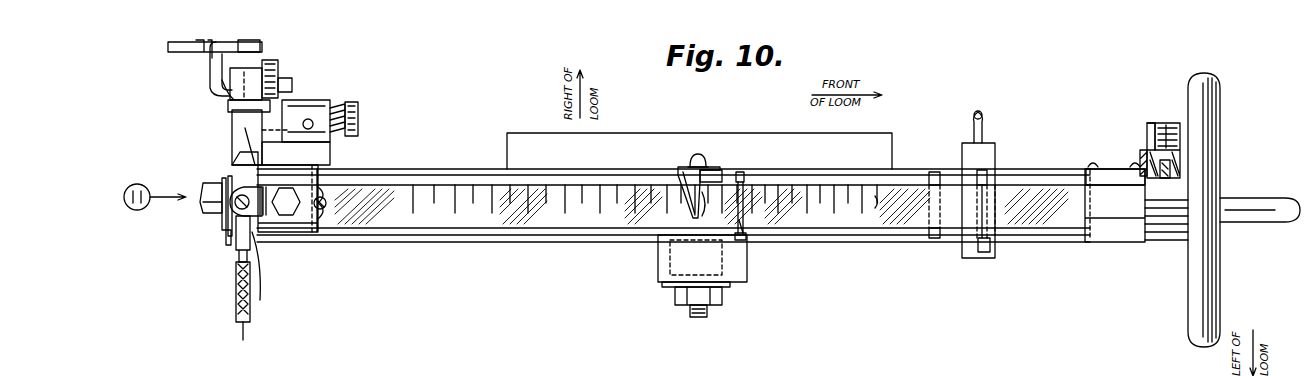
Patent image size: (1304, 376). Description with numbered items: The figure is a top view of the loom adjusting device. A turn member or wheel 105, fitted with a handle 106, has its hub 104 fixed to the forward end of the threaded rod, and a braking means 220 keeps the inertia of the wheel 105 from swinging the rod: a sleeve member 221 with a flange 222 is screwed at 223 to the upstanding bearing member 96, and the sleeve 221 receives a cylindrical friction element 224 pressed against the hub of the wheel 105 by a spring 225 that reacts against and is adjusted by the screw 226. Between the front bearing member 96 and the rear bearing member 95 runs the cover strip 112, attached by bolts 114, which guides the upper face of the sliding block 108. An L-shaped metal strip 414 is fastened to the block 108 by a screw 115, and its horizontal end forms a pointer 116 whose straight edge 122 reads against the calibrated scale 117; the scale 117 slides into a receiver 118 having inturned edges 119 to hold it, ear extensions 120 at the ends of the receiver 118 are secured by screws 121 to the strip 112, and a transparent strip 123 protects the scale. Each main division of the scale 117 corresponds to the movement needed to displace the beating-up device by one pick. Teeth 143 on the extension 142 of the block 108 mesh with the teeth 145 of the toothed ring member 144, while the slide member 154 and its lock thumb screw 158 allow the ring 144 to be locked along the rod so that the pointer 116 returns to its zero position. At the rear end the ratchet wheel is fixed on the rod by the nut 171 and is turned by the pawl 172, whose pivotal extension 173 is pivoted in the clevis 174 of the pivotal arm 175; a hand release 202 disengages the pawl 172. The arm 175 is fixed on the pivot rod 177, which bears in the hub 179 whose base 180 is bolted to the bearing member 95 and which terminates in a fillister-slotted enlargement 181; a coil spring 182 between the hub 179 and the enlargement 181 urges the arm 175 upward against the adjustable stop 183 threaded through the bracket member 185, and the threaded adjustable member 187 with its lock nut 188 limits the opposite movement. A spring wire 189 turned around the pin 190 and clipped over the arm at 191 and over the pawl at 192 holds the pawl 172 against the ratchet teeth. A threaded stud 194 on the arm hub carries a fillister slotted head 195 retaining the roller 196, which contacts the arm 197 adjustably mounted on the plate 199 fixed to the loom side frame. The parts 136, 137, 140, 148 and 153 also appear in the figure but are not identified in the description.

The upstanding bearing member 95 is at (320, 222).
The upstanding bearing member 96 is at (1130, 246).
The hub 104 is at (1166, 242).
The turn member 105 is at (1210, 103).
The handle 106 is at (1270, 222).
The block 108 is at (742, 172).
The cover strip 112 is at (487, 158).
The bolt 114 is at (290, 215).
The screw 115 is at (700, 154).
The pointer 116 is at (688, 167).
The scale 117 is at (438, 205).
The receiver 118 is at (644, 184).
The inturned edges 119 is at (383, 180).
The ear extensions 120 is at (322, 212).
The screw 121 is at (323, 200).
The straight edge 122 is at (705, 225).
The transparent strip 123 is at (890, 230).
The nut 136 is at (700, 317).
The bolt 137 is at (678, 300).
The slide block 140 is at (658, 272).
The extension 142 is at (745, 173).
The teeth 143 is at (748, 238).
The toothed ring member 144 is at (935, 172).
The teeth 145 is at (935, 240).
The slide 148 is at (990, 175).
The rod 153 is at (990, 256).
The slide member 154 is at (994, 146).
The lock thumb screw 158 is at (980, 110).
The nut 171 is at (208, 208).
The pawl 172 is at (237, 290).
The pivotal extension 173 is at (230, 226).
The clevis 174 is at (238, 254).
The pivotal arm 175 is at (200, 158).
The pivot rod 177 is at (230, 122).
The hub 179 is at (312, 104).
The base 180 is at (305, 154).
The fillister-slotted enlargement 181 is at (360, 108).
The coil spring 182 is at (348, 106).
The adjustable stop 183 is at (224, 214).
The bracket member 185 is at (248, 212).
The threaded adjustable member 187 is at (292, 84).
The lock nut 188 is at (235, 104).
The spring wire 189 is at (228, 244).
The pin 190 is at (232, 168).
The clip point 191 is at (232, 150).
The clip point 192 is at (257, 250).
The threaded stud 194 is at (275, 74).
The fillister slotted head 195 is at (260, 47).
The roller 196 is at (226, 88).
The arm 197 is at (215, 80).
The plate 199 is at (186, 52).
The hand release 202 is at (244, 342).
The braking means 220 is at (1180, 158).
The sleeve member 221 is at (1175, 135).
The flange 222 is at (1112, 168).
The screw connection 223 is at (1094, 160).
The cylindrical friction element 224 is at (1172, 168).
The spring 225 is at (1148, 148).
The screw 226 is at (1163, 128).
The L-shaped metal strip 414 is at (720, 170).